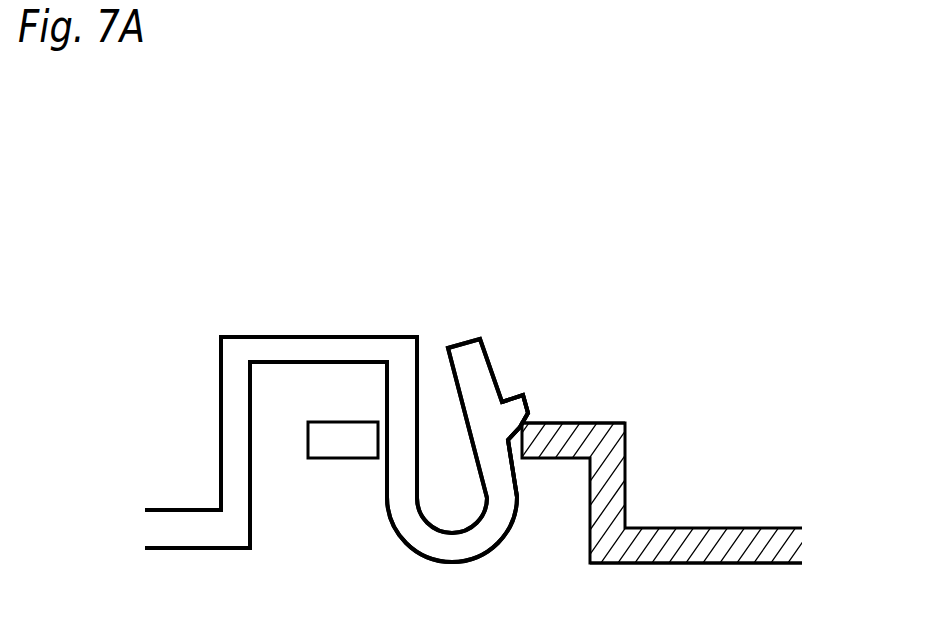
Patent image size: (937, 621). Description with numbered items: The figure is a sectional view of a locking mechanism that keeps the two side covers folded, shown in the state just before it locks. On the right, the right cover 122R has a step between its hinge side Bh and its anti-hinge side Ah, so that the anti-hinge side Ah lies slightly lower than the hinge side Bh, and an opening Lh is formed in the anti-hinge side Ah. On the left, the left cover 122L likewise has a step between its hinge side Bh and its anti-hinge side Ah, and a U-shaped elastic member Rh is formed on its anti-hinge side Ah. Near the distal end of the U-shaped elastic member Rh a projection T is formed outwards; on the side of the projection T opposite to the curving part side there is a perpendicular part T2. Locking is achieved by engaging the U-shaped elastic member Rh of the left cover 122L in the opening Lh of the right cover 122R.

The left cover 122L is at (155, 402).
The right cover 122R is at (744, 396).
The projection T is at (528, 398).
The perpendicular part T2 is at (512, 397).
The U-shaped elastic member Rh is at (422, 535).
The opening Lh is at (513, 445).
The anti-hinge side Ah is at (305, 345).
The hinge side Bh is at (188, 508).